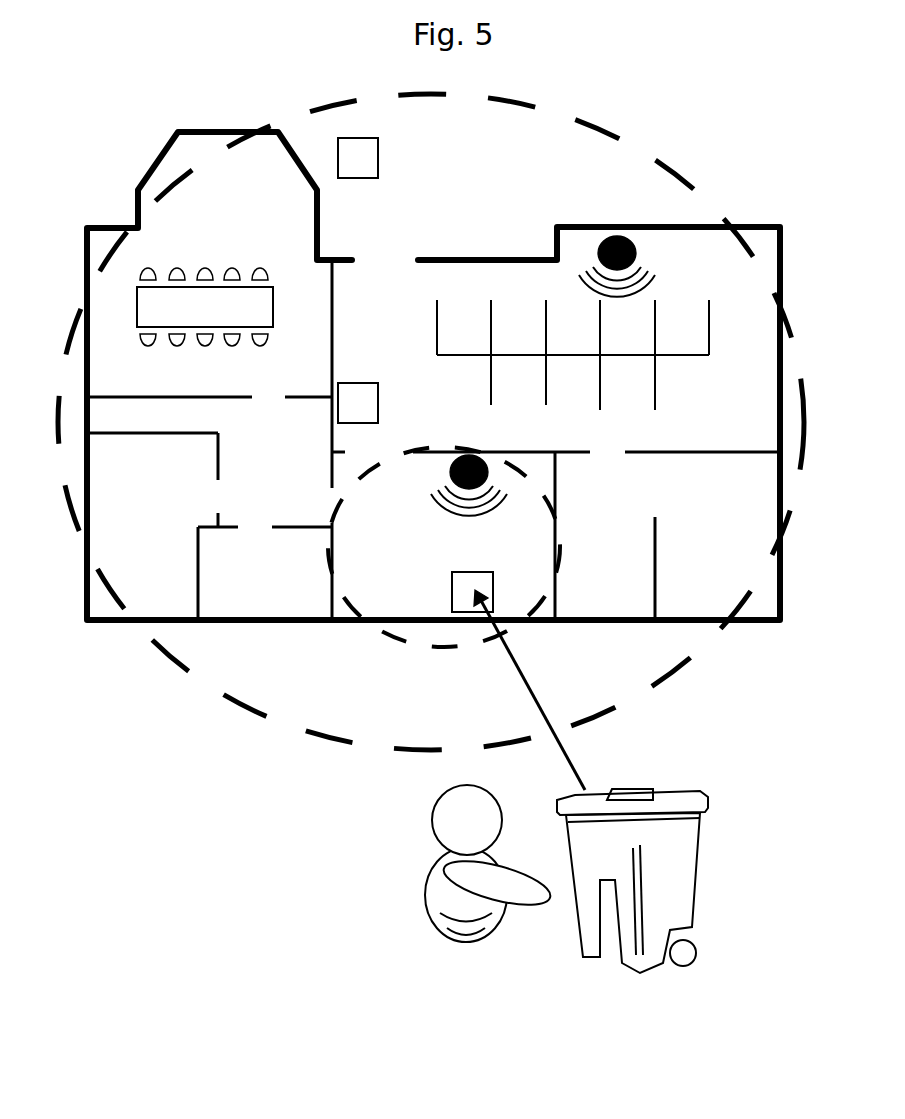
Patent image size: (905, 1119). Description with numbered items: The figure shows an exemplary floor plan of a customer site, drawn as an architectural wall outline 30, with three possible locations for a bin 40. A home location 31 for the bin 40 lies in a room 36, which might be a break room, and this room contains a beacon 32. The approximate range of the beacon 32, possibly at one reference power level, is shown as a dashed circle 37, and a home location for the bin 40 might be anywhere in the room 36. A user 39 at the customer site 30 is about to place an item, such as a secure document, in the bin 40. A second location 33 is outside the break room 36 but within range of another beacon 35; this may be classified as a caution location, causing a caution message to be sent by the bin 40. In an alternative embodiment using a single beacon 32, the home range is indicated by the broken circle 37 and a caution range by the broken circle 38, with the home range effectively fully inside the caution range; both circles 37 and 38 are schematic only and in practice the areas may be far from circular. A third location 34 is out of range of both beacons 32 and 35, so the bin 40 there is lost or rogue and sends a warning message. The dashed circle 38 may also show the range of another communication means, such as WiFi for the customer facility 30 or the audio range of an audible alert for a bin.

The architectural wall outline 30 is at (585, 228).
The home location 31 is at (465, 597).
The beacon 32 is at (450, 475).
The caution location 33 is at (365, 408).
The lost location 34 is at (365, 165).
The beacon 35 is at (640, 260).
The room 36 is at (535, 558).
The dashed circle 37 is at (388, 638).
The dashed circle 38 is at (268, 718).
The user 39 is at (432, 900).
The bin 40 is at (683, 862).